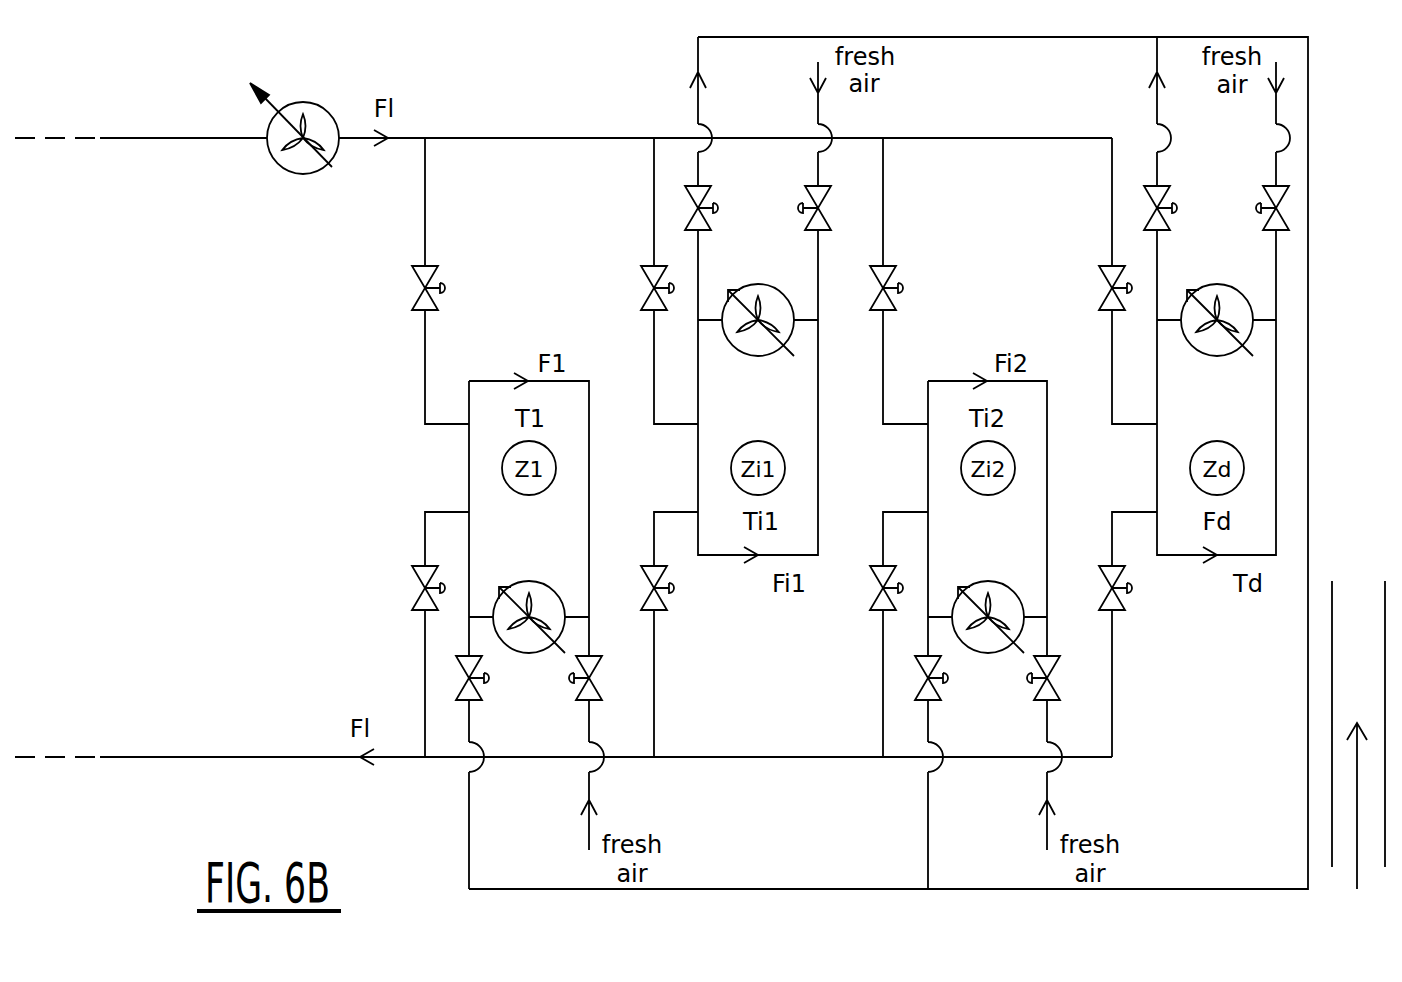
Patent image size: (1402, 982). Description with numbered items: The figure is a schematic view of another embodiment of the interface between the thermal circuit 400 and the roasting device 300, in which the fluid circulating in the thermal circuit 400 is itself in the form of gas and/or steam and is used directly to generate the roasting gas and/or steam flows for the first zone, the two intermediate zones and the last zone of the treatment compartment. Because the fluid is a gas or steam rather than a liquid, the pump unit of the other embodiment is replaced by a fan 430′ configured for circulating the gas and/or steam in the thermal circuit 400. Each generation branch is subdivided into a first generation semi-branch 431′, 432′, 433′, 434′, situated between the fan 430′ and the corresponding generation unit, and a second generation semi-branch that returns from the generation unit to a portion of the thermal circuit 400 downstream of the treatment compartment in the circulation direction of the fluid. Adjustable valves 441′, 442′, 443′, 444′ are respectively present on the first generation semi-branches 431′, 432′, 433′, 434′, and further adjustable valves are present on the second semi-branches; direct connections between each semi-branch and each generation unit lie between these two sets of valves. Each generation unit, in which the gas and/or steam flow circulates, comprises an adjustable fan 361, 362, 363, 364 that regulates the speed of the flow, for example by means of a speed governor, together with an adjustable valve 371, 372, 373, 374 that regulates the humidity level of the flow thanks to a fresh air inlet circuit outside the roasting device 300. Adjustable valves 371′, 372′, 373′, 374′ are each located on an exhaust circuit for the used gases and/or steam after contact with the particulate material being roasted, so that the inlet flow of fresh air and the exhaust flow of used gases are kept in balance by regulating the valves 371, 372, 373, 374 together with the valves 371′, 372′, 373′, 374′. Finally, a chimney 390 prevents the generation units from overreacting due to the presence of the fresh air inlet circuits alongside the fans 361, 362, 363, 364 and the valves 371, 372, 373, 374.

The roasting device 300 is at (528, 76).
The thermal circuit 400 is at (192, 138).
The fan 430′ is at (312, 104).
The first generation semi-branch 431′ is at (423, 182).
The first generation semi-branch 432′ is at (652, 197).
The first generation semi-branch 433′ is at (885, 173).
The first generation semi-branch 434′ is at (1113, 170).
The adjustable valve 441′ is at (437, 302).
The adjustable valve 442′ is at (640, 277).
The adjustable valve 443′ is at (895, 303).
The adjustable valve 444′ is at (1107, 277).
The adjustable fan 361 is at (525, 587).
The adjustable fan 362 is at (742, 350).
The adjustable fan 363 is at (985, 587).
The adjustable fan 364 is at (1202, 350).
The adjustable valve 371 is at (585, 697).
The adjustable valve 371′ is at (477, 692).
The adjustable valve 372 is at (810, 222).
The adjustable valve 372′ is at (707, 195).
The adjustable valve 373 is at (1045, 697).
The adjustable valve 373′ is at (937, 692).
The adjustable valve 374 is at (1270, 222).
The adjustable valve 374′ is at (1165, 195).
The chimney 390 is at (1351, 578).